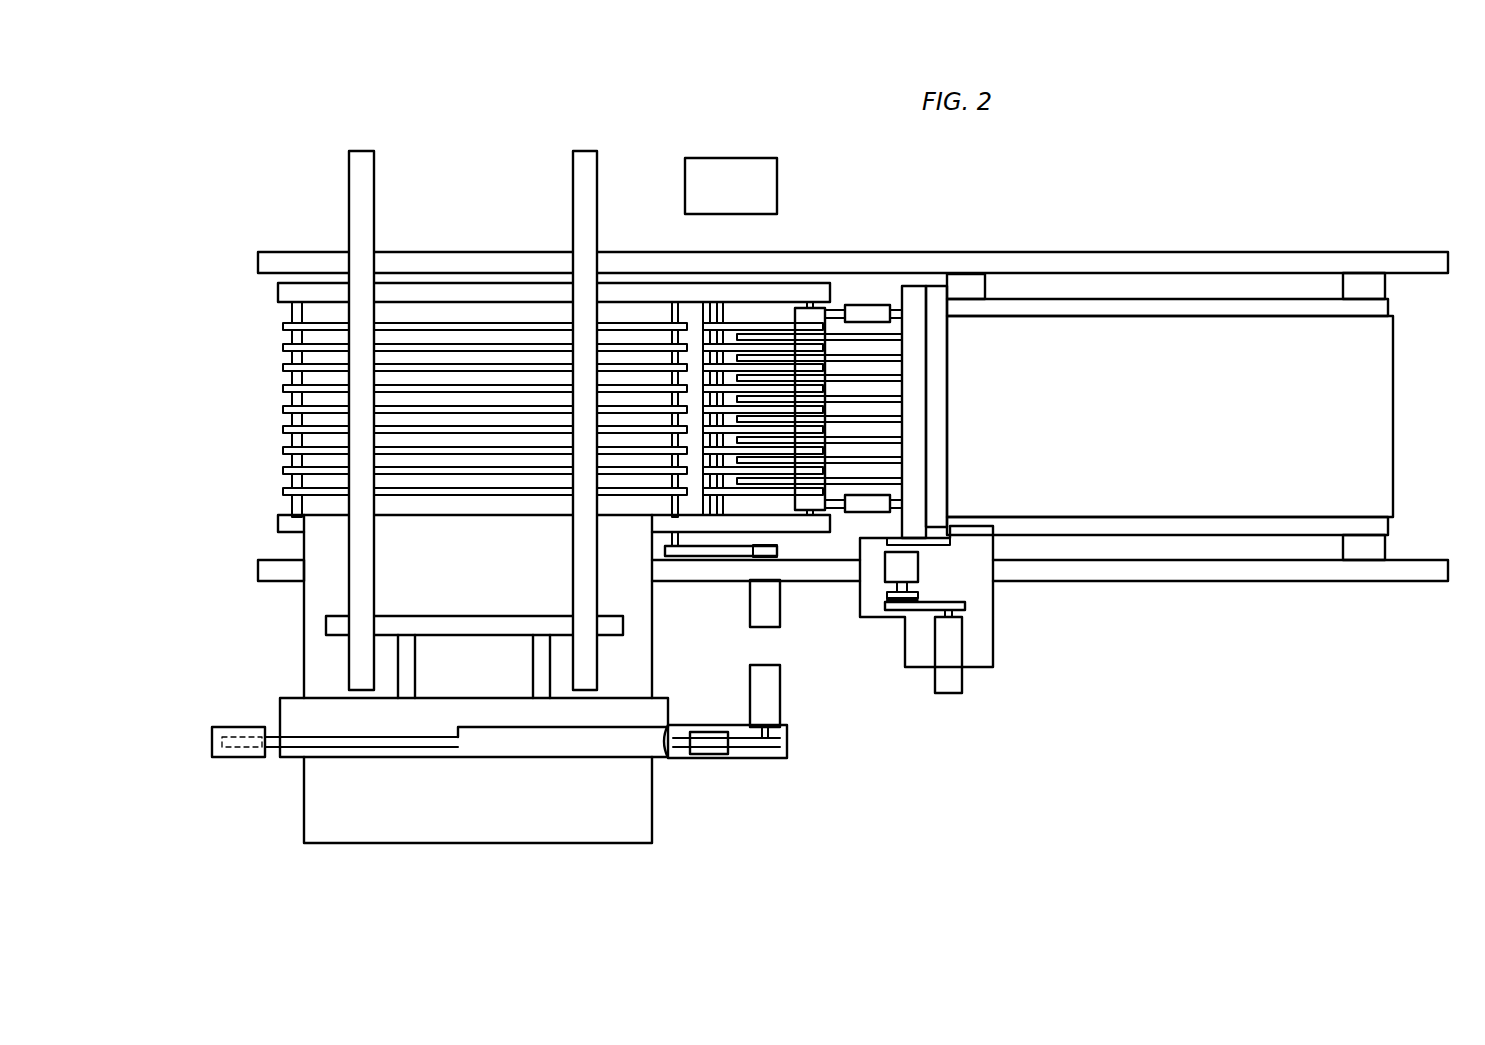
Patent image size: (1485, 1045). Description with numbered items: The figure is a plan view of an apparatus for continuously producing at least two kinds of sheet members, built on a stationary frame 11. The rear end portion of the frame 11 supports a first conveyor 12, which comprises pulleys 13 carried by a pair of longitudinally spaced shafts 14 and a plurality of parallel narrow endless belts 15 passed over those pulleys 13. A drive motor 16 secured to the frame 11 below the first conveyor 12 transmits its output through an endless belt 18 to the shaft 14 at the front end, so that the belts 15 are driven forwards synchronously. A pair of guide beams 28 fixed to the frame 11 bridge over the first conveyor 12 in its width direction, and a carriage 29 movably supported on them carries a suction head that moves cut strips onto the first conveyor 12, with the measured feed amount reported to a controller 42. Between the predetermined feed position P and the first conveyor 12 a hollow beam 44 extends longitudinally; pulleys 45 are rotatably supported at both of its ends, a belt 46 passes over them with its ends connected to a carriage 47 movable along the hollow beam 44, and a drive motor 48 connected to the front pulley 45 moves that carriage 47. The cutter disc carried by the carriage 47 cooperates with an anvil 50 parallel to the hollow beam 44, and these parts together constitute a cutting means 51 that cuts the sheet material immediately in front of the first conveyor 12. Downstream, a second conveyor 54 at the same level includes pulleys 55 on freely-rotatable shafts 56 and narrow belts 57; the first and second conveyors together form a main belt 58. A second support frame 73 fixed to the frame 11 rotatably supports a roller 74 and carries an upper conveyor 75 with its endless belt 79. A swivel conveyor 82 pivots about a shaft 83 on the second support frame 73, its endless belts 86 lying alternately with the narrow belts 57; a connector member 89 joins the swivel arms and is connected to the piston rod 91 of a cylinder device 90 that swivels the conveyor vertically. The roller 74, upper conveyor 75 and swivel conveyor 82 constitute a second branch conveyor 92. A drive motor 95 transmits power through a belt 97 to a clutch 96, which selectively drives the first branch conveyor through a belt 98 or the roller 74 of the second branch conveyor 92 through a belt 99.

The stationary frame 11 is at (1118, 265).
The first conveyor 12 is at (275, 380).
The pulleys 13 is at (287, 503).
The shafts 14 is at (300, 462).
The narrow endless belts 15 is at (503, 476).
The drive motor 16 is at (752, 600).
The endless belt 18 is at (708, 558).
The guide beams 28 is at (374, 186).
The carriage 29 is at (470, 625).
The controller 42 is at (746, 182).
The hollow beam 44 is at (556, 758).
The pulleys 45 is at (245, 758).
The belt 46 is at (405, 749).
The carriage 47 is at (712, 757).
The drive motor 48 is at (770, 700).
The anvil 50 is at (672, 735).
The cutting means 51 is at (790, 762).
The second conveyor 54 is at (740, 333).
The pulleys 55 is at (706, 320).
The freely-rotatable shafts 56 is at (812, 302).
The narrow belts 57 is at (800, 320).
The main belt 58 is at (632, 498).
The second support frame 73 is at (1240, 305).
The roller 74 is at (940, 437).
The upper conveyor 75 is at (1350, 385).
The endless belt 79 is at (1370, 445).
The swivel conveyor 82 is at (884, 348).
The shaft 83 is at (913, 475).
The endless belt 86 is at (898, 400).
The connector member 89 is at (850, 310).
The cylinder device 90 is at (878, 505).
The piston rod 91 is at (832, 522).
The second branch conveyor 92 is at (920, 284).
The drive motor 95 is at (962, 685).
The clutch 96 is at (886, 568).
The belt 97 is at (920, 610).
The belt 98 is at (930, 547).
The belt 99 is at (890, 597).
The predetermined feed position P is at (600, 762).